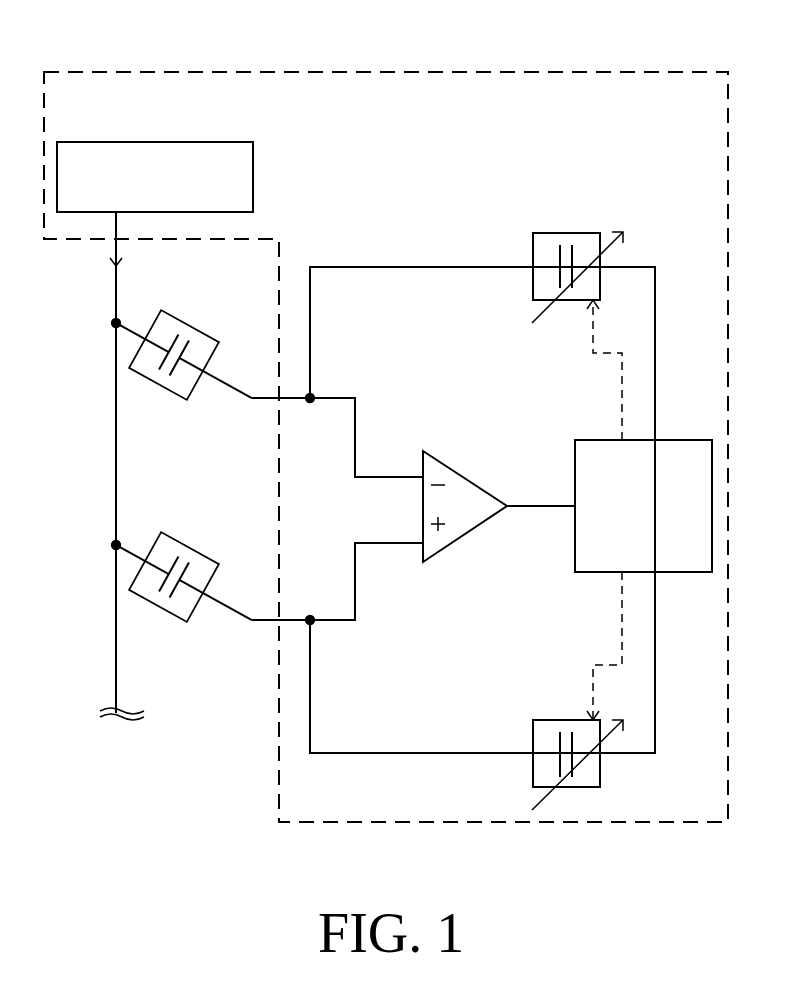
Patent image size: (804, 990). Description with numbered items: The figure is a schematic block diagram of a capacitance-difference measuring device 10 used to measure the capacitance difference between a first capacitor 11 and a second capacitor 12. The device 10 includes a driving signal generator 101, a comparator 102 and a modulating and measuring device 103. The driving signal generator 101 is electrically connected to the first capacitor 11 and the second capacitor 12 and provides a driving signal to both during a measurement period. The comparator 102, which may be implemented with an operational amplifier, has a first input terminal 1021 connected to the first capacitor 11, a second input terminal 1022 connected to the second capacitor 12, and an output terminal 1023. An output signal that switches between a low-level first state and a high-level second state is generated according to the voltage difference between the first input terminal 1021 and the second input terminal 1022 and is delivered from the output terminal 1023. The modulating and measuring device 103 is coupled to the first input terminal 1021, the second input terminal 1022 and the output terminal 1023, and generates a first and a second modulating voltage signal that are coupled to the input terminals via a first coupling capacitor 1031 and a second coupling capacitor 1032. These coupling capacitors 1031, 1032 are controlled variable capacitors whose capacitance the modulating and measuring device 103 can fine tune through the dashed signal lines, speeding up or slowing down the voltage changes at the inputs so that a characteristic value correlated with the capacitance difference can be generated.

The capacitance-difference measuring device 10 is at (378, 72).
The driving signal generator 101 is at (253, 180).
The first capacitor 11 is at (204, 350).
The second capacitor 12 is at (204, 571).
The comparator 102 is at (469, 535).
The first input terminal 1021 is at (397, 477).
The second input terminal 1022 is at (394, 543).
The output terminal 1023 is at (527, 506).
The modulating and measuring device 103 is at (580, 574).
The first coupling capacitor 1031 is at (546, 243).
The second coupling capacitor 1032 is at (546, 732).